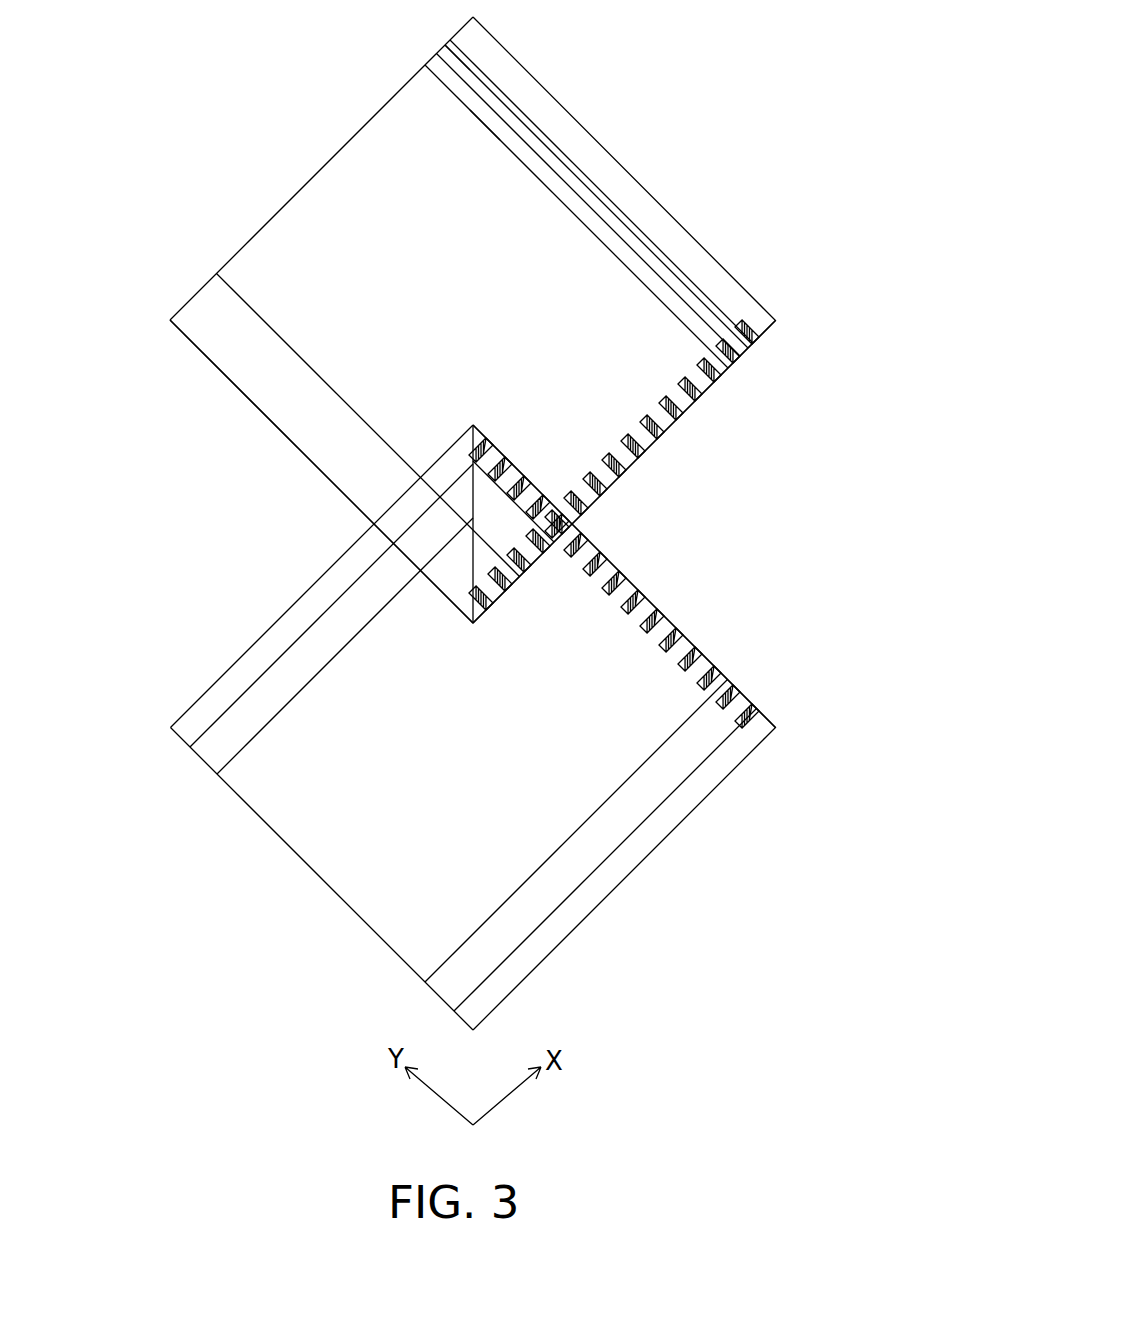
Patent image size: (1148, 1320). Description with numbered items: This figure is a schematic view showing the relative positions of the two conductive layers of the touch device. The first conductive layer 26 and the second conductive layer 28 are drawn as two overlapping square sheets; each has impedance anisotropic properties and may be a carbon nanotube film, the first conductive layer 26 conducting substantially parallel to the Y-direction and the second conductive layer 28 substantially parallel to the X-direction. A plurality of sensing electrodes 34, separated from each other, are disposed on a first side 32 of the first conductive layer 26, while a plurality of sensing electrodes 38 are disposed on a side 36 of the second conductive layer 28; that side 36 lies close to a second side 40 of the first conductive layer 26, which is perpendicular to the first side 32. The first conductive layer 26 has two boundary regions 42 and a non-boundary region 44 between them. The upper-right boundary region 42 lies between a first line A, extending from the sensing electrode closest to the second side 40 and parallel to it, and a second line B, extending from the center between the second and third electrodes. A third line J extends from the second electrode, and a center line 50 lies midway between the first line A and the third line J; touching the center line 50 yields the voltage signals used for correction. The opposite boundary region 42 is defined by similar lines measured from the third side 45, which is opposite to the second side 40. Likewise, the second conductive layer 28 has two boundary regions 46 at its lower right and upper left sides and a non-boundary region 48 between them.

The second side 40 is at (597, 140).
The boundary region 42 is at (462, 53).
The non-boundary region 44 is at (320, 245).
The third side 45 is at (232, 385).
The center line 50 is at (633, 232).
The first line A is at (520, 102).
The second line B is at (490, 130).
The third line J is at (472, 90).
The second conductive layer 28 is at (505, 865).
The boundary region 46 is at (223, 747).
The non-boundary region 48 is at (343, 847).
The first conductive layer 26 is at (640, 524).
The first side 32 is at (712, 385).
The sensing electrodes 34 is at (650, 456).
The side 36 is at (712, 662).
The sensing electrodes 38 is at (660, 614).